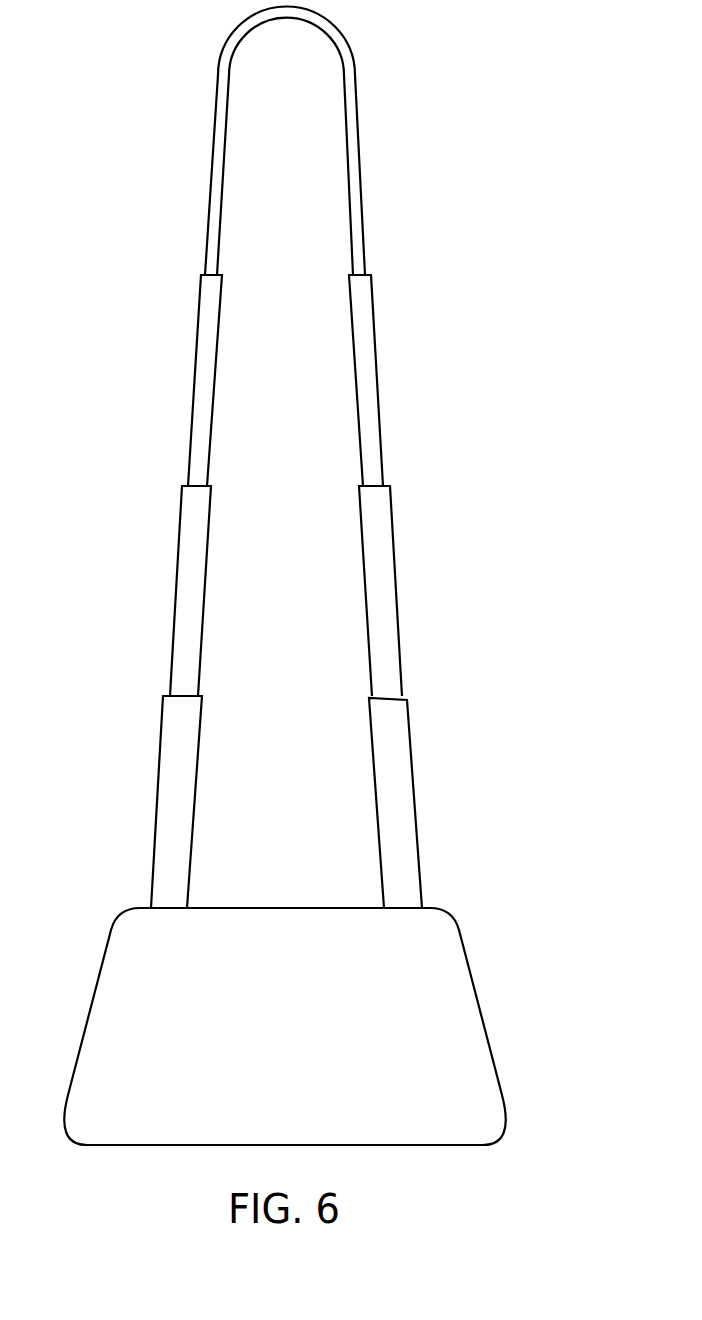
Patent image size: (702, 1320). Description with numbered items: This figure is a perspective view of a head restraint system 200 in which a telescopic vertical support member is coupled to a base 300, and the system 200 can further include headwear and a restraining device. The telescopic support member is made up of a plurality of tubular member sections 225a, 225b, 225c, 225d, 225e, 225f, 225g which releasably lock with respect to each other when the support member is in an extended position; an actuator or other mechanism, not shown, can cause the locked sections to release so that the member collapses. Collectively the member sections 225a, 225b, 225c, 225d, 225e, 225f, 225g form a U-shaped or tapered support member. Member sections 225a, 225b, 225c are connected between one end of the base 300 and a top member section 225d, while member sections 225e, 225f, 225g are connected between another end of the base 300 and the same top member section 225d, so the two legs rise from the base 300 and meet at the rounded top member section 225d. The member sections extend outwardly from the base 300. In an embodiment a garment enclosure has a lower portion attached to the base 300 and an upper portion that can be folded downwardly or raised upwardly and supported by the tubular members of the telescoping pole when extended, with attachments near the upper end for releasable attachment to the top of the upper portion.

The head restraint system 200 is at (455, 180).
The tubular member section 225a is at (416, 803).
The tubular member section 225b is at (396, 592).
The tubular member section 225c is at (380, 418).
The top member section 225d is at (356, 88).
The tubular member section 225e is at (192, 418).
The tubular member section 225f is at (177, 592).
The tubular member section 225g is at (159, 800).
The base 300 is at (509, 1117).